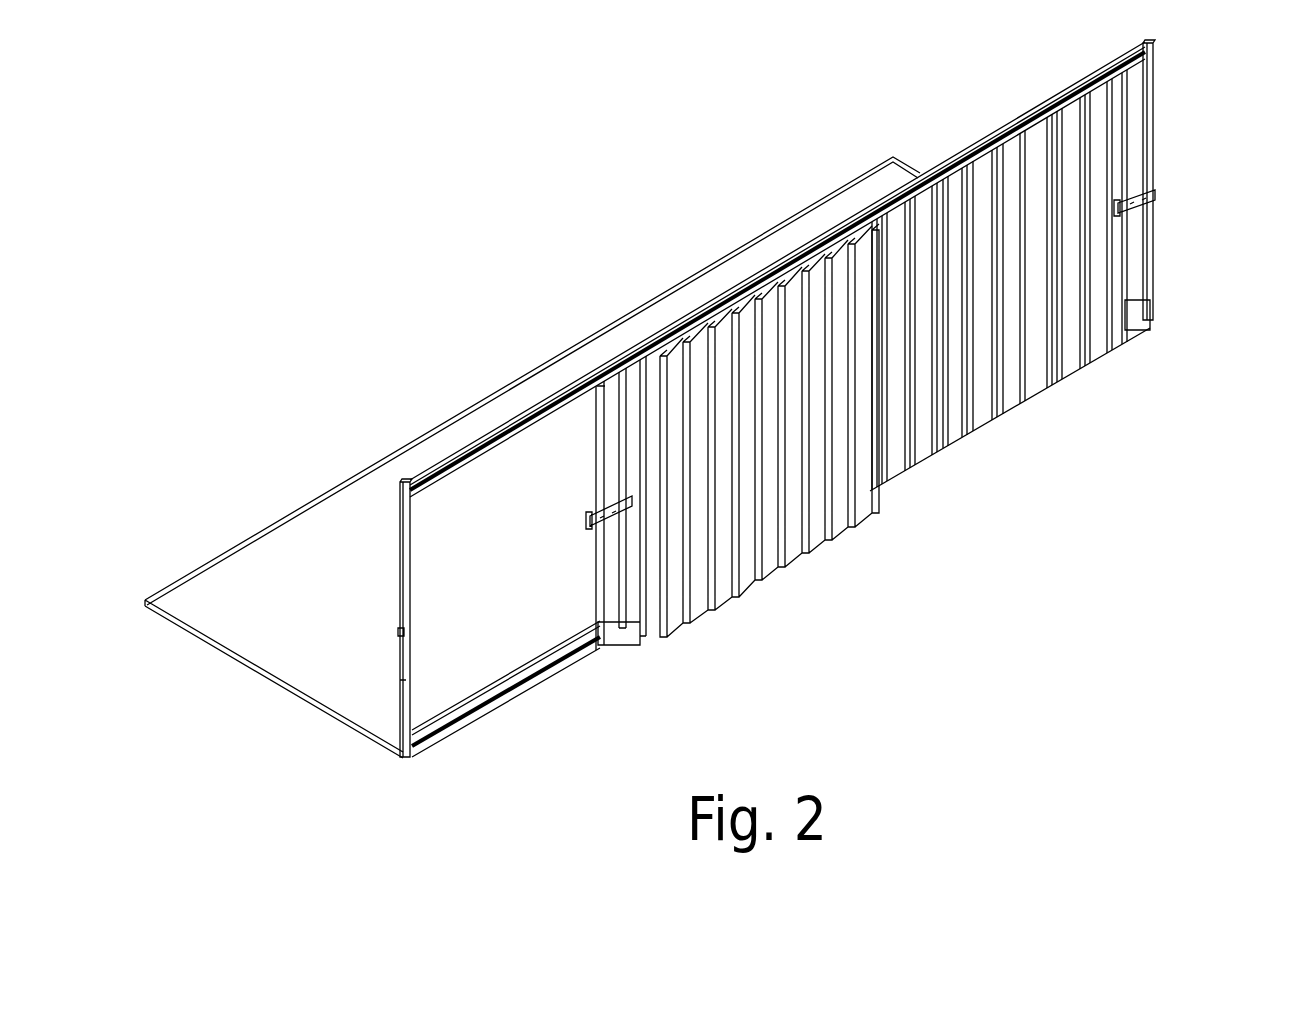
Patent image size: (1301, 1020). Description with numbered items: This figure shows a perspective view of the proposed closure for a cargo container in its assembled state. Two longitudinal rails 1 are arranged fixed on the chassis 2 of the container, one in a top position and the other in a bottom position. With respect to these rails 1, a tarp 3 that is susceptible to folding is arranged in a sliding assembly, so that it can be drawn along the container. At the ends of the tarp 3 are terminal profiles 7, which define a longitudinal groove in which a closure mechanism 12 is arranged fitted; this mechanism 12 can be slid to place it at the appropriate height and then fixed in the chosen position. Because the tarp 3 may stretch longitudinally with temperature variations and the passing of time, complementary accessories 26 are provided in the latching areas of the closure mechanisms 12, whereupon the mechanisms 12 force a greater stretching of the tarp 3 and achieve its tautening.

The longitudinal rails 1 is at (470, 455).
The chassis 2 is at (400, 676).
The tarp 3 is at (922, 377).
The terminal profiles 7 is at (597, 432).
The closure mechanism 12 is at (598, 530).
The complementary accessories 26 is at (400, 632).